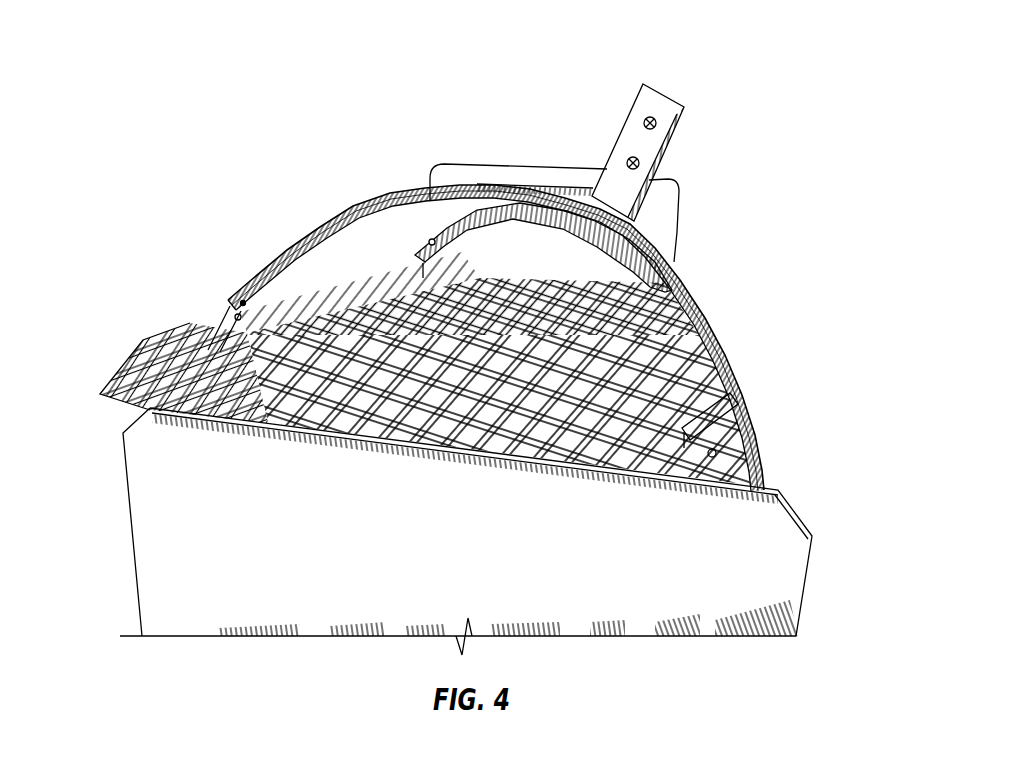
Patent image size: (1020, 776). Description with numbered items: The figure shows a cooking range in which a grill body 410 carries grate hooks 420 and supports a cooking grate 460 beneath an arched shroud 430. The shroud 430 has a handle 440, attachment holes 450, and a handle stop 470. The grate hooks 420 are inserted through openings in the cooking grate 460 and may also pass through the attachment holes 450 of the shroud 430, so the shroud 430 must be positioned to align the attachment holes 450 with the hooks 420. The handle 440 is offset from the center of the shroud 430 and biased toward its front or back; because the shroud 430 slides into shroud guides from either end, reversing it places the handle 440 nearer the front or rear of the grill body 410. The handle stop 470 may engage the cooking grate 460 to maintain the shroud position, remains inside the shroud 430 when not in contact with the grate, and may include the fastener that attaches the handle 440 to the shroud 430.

The grill body 410 is at (796, 535).
The grate hooks 420 is at (743, 388).
The shroud 430 is at (351, 206).
The handle 440 is at (661, 139).
The attachment holes 450 is at (243, 302).
The cooking grate 460 is at (281, 426).
The handle stop 470 is at (580, 233).